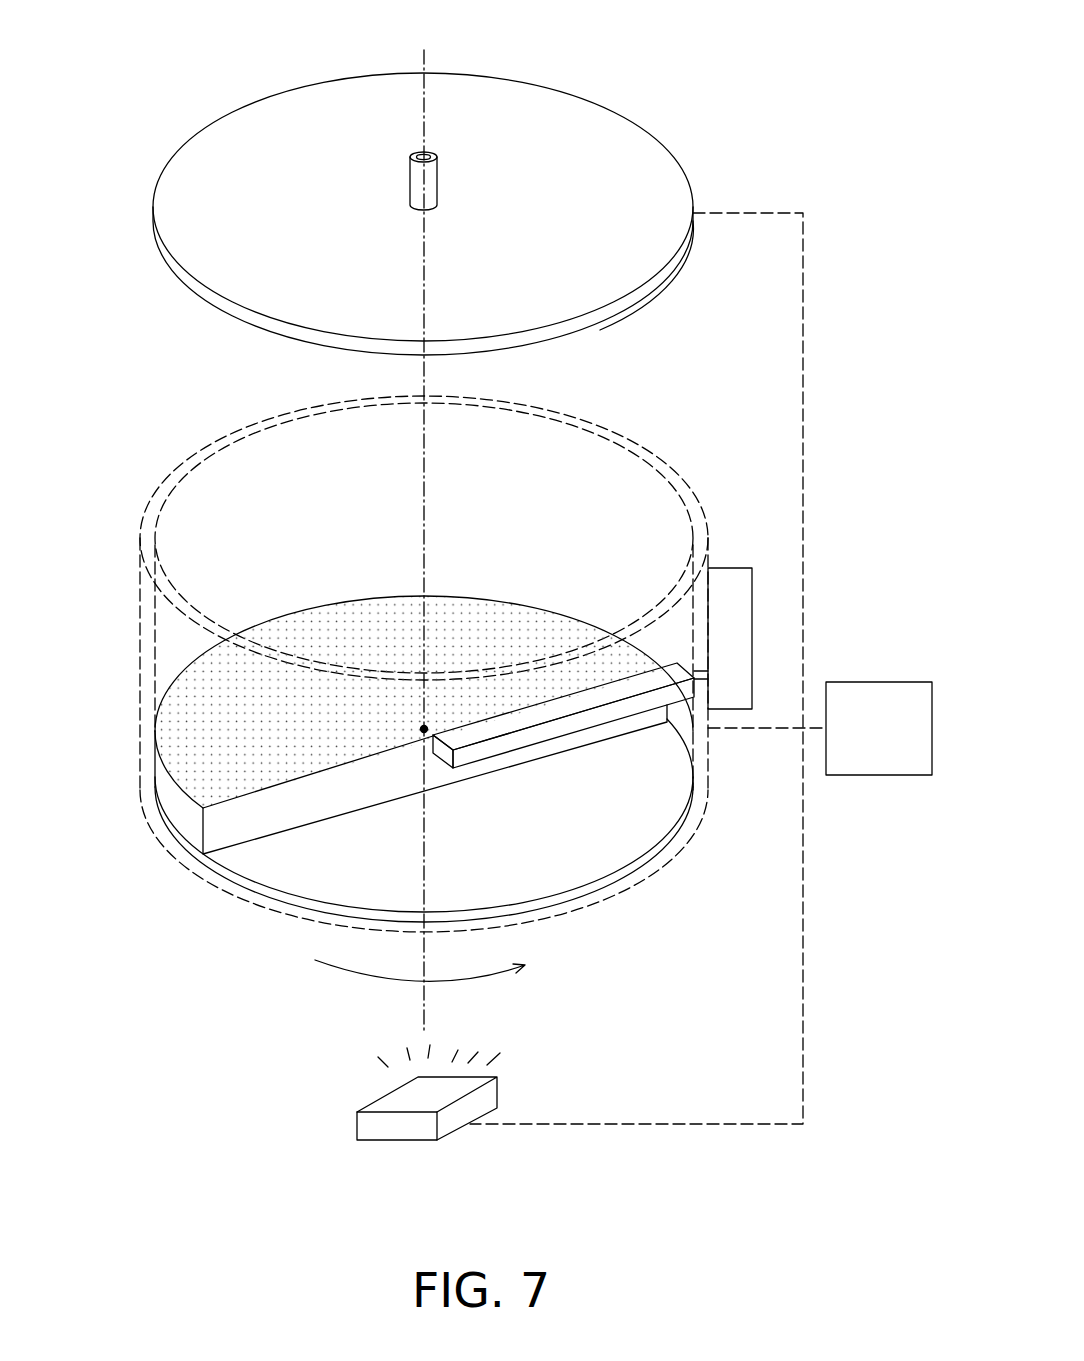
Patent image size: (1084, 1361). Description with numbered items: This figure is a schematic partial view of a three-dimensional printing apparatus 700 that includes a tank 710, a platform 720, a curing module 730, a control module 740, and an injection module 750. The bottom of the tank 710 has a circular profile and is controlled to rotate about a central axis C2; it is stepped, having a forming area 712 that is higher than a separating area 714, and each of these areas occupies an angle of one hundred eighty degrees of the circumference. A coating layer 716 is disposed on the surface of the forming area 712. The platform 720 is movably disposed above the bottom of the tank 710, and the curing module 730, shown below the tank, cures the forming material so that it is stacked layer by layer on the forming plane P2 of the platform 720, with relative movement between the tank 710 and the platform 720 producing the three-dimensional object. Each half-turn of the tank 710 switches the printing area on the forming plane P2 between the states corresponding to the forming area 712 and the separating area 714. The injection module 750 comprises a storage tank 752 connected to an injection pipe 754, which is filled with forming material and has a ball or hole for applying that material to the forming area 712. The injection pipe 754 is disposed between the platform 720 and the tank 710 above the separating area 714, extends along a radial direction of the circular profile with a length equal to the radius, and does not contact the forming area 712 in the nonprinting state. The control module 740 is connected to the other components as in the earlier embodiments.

The three-dimensional printing apparatus 700 is at (880, 98).
The tank 710 is at (163, 480).
The forming area 712 is at (180, 833).
The separating area 714 is at (245, 880).
The coating layer 716 is at (204, 648).
The platform 720 is at (630, 158).
The curing module 730 is at (395, 1127).
The control module 740 is at (878, 776).
The injection module 750 is at (745, 950).
The storage tank 752 is at (733, 692).
The injection pipe 754 is at (573, 725).
The central axis C2 is at (422, 521).
The forming plane P2 is at (650, 304).